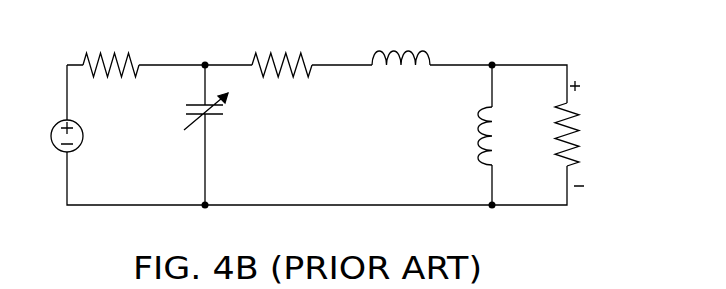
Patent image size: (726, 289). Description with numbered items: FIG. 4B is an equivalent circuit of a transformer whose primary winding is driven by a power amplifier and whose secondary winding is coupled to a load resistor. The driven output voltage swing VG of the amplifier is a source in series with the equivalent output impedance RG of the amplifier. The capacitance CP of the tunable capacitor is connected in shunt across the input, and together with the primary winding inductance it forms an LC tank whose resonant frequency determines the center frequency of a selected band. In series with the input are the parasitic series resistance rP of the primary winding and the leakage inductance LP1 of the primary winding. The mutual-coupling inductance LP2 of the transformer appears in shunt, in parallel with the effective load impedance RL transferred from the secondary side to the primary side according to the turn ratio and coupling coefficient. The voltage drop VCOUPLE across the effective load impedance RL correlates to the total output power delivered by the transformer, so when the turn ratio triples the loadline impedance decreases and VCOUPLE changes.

The equivalent output impedance RG is at (111, 49).
The driven output voltage swing VG is at (79, 136).
The capacitance of the tunable capacitor CP is at (212, 118).
The input parasitic series resistance of the primary winding rP is at (282, 49).
The leakage inductance of the primary winding LP1 is at (398, 43).
The mutual-coupling inductance of the transformer LP2 is at (452, 136).
The effective load impedance transferred to the primary side RL is at (614, 134).
The voltage drop across the loadline impedance VCOUPLE is at (607, 131).